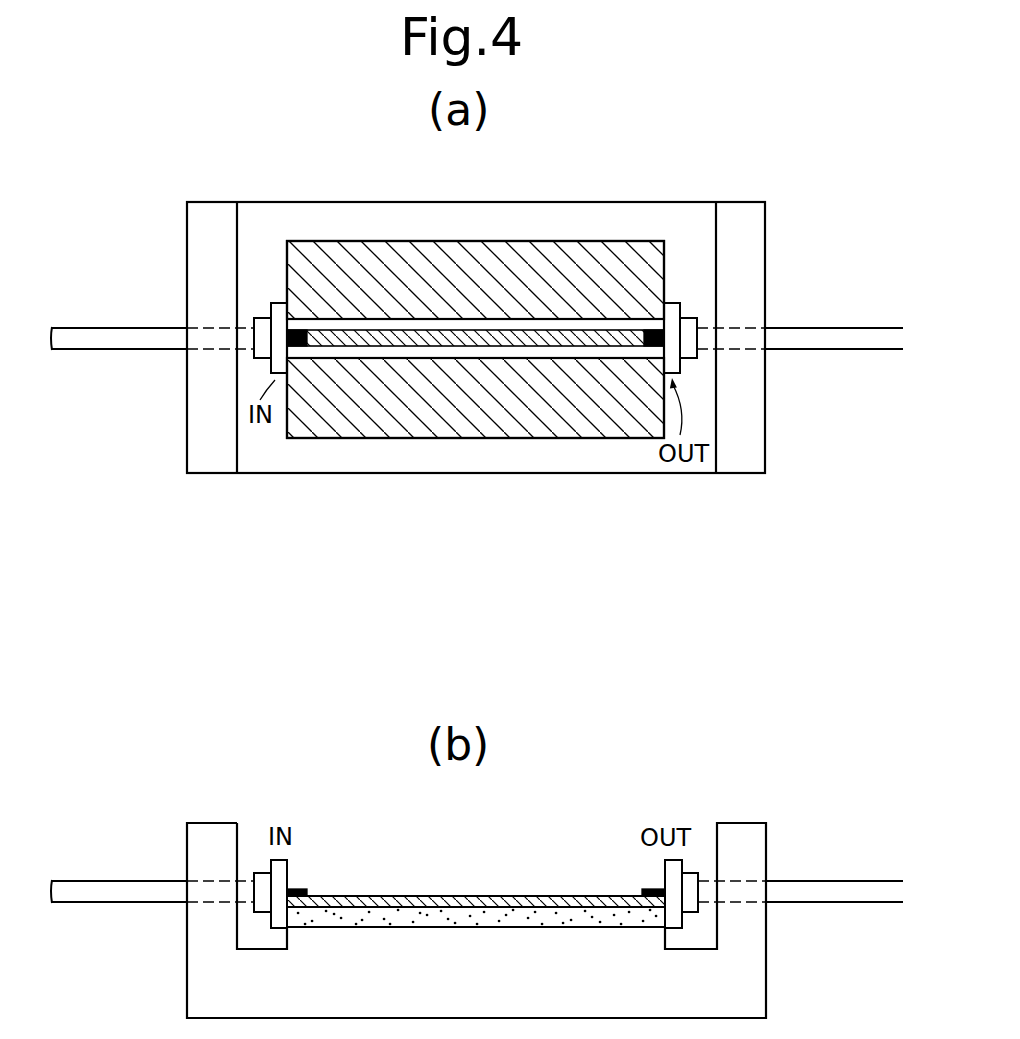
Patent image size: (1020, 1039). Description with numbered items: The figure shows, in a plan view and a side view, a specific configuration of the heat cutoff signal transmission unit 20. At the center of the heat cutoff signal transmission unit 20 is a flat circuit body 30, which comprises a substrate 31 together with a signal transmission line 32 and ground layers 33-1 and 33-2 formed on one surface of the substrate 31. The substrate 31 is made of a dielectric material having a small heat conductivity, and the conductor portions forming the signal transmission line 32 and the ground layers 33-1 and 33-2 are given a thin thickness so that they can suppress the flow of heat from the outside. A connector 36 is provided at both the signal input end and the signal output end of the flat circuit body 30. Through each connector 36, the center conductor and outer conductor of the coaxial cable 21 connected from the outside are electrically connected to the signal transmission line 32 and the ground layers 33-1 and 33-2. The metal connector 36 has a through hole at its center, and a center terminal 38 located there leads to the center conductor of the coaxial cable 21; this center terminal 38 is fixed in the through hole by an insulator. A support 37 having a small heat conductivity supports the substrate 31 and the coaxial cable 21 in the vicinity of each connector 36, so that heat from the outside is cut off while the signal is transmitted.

The heat cutoff signal transmission unit 20 is at (491, 181).
The coaxial cable 21 is at (130, 350).
The flat circuit body 30 is at (363, 226).
The substrate 31 is at (385, 915).
The signal transmission line 32 is at (335, 340).
The ground layer 33-1 is at (600, 256).
The ground layer 33-2 is at (534, 427).
The connector 36 is at (278, 305).
The support 37 is at (195, 458).
The center terminal 38 is at (655, 352).